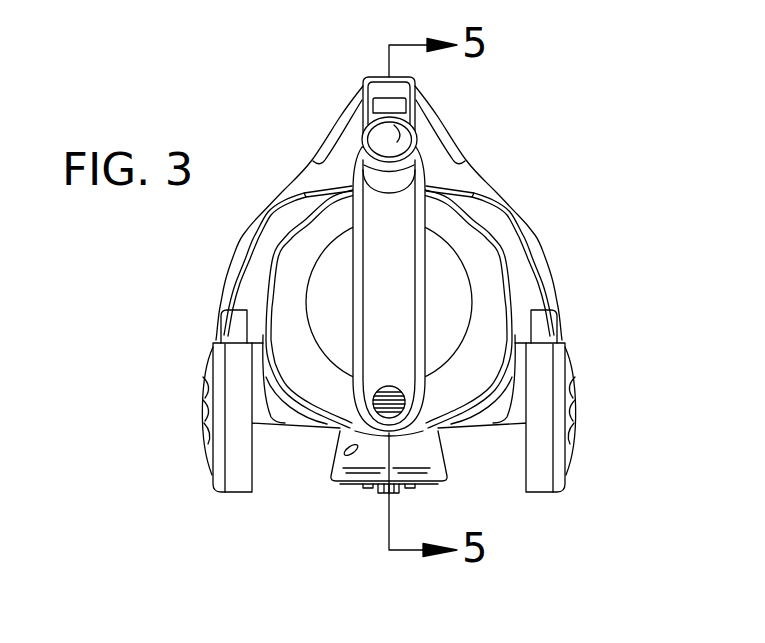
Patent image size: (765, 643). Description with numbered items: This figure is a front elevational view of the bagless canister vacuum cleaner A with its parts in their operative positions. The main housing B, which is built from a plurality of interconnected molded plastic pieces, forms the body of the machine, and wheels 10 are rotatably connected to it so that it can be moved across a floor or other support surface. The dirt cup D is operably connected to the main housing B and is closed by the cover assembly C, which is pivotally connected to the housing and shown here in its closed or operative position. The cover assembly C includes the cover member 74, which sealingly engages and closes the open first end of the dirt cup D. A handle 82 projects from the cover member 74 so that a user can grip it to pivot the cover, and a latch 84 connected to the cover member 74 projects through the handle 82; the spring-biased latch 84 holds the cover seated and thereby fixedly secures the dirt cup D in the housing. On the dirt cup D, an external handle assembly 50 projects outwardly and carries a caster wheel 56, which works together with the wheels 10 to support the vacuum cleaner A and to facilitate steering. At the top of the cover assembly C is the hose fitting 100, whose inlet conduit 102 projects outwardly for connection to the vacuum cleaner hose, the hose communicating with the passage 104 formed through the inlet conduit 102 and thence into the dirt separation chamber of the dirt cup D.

The vacuum cleaner A is at (562, 208).
The main housing B is at (468, 177).
The cover assembly C is at (298, 268).
The dirt cup D is at (512, 292).
The wheels 10 is at (242, 495).
The handle assembly 50 is at (357, 483).
The caster wheel 56 is at (383, 498).
The cover member 74 is at (455, 307).
The handle 82 is at (388, 270).
The latch 84 is at (392, 385).
The hose fitting 100 is at (387, 172).
The inlet conduit 102 is at (363, 152).
The passage 104 is at (400, 138).